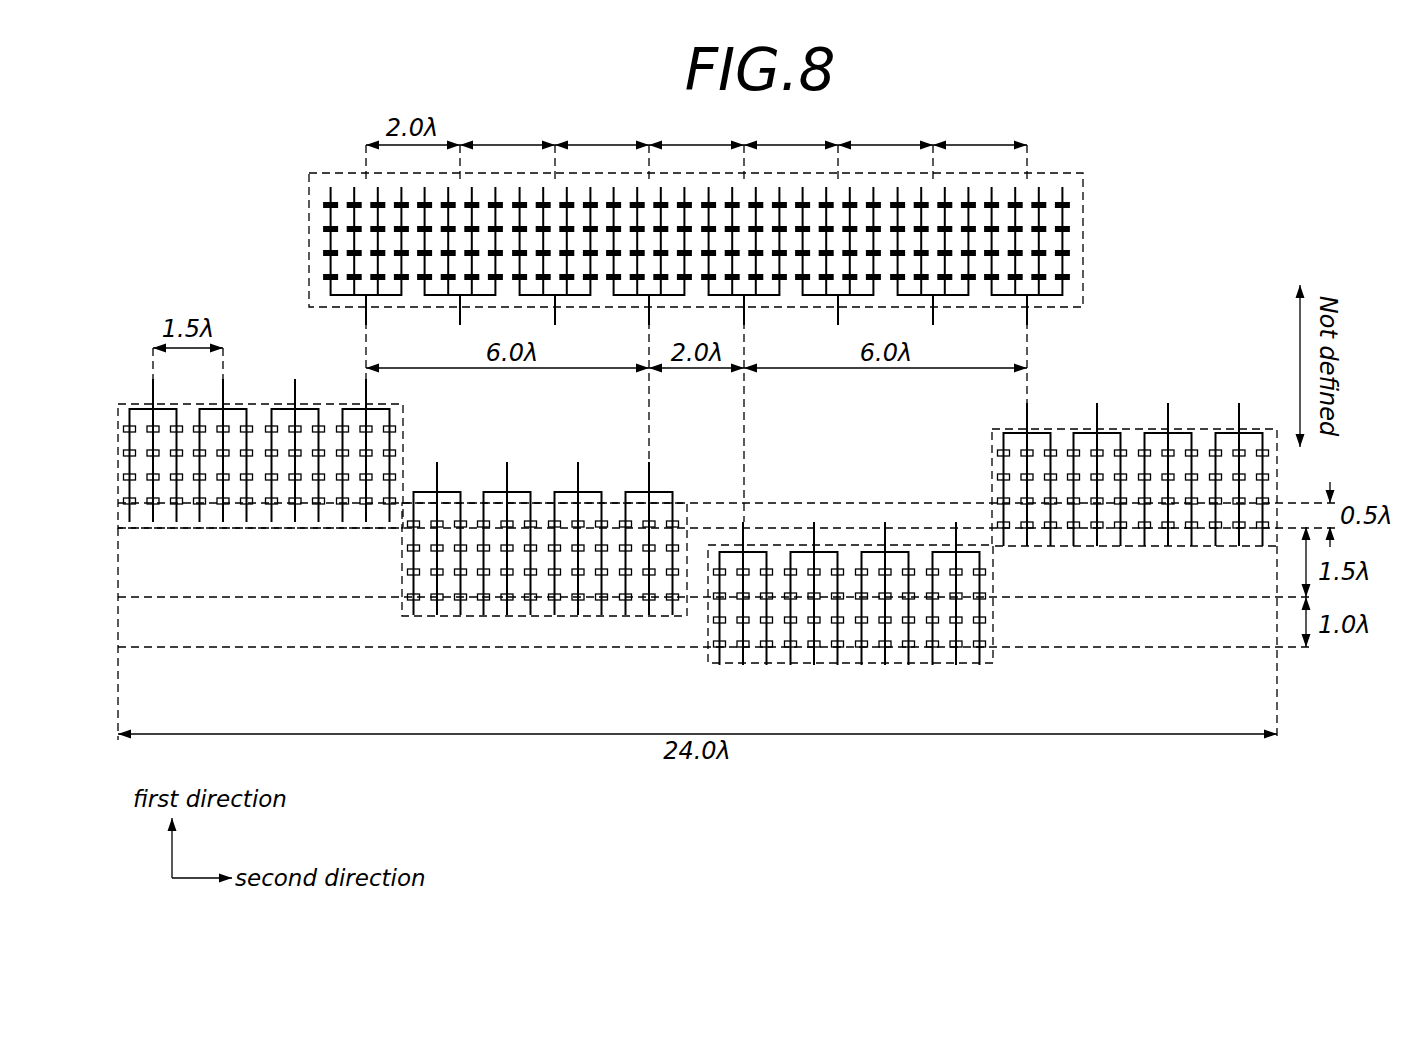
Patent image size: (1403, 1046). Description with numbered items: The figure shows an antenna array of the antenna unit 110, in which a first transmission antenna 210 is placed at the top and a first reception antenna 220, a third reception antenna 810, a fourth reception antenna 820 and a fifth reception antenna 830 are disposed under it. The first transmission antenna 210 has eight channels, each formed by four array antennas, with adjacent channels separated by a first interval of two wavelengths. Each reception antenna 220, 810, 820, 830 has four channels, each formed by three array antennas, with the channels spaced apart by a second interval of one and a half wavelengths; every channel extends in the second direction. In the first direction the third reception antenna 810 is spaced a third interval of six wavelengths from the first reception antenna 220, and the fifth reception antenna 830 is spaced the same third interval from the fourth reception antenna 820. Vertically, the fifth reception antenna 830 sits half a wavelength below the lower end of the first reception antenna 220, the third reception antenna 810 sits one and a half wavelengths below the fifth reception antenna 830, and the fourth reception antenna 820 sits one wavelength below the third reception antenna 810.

The antenna unit 110 is at (1023, 98).
The first transmission antenna 210 is at (1053, 172).
The first reception antenna 220 is at (255, 404).
The third reception antenna 810 is at (542, 618).
The fourth reception antenna 820 is at (848, 665).
The fifth reception antenna 830 is at (1202, 428).